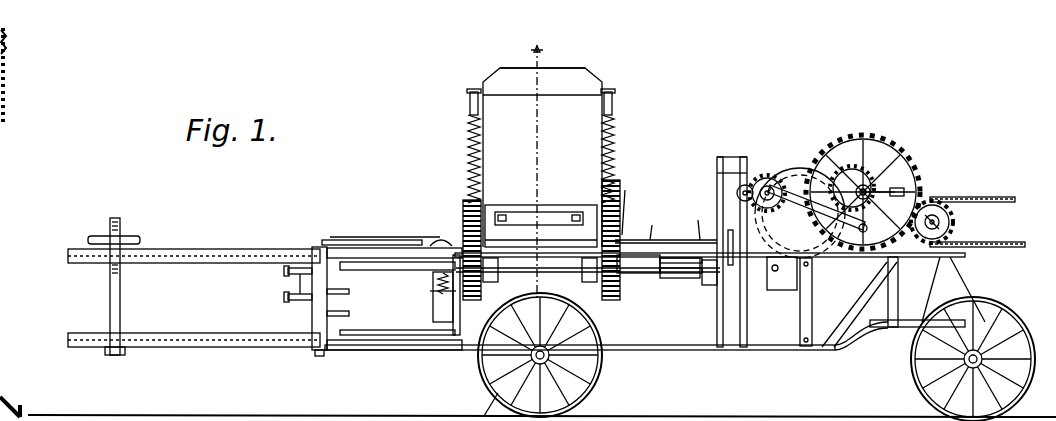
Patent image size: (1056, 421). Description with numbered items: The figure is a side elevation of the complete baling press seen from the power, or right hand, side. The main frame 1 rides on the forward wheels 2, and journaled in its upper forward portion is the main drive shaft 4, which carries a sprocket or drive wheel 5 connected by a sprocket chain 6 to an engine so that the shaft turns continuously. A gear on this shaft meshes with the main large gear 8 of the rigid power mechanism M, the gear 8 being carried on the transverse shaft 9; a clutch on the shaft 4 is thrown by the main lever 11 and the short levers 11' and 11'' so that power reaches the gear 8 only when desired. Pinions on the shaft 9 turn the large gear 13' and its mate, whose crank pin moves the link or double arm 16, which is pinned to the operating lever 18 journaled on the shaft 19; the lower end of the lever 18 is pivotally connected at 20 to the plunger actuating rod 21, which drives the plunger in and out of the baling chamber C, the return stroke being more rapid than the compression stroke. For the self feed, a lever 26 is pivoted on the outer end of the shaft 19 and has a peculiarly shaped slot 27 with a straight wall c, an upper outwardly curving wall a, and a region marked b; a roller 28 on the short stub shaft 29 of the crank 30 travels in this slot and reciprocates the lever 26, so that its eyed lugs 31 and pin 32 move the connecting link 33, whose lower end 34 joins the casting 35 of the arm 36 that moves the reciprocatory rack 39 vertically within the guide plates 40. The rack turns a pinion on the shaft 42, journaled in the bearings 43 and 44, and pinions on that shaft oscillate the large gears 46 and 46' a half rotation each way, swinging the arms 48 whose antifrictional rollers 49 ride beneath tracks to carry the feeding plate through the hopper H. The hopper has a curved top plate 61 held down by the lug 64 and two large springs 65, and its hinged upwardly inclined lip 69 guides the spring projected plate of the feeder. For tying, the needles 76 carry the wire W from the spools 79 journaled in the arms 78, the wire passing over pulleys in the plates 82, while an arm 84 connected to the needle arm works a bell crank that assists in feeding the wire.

The main frame 1 is at (780, 345).
The forward wheels 2 is at (990, 312).
The main drive shaft 4 is at (945, 225).
The sprocket or drive wheel 5 is at (985, 204).
The sprocket chain 6 is at (1000, 190).
The main large gear 8 is at (905, 175).
The shaft 9 is at (940, 205).
The main lever 11 is at (696, 219).
The short lever 11' is at (630, 201).
The short lever 11'' is at (660, 221).
The large gear 13' is at (821, 168).
The link or double arm 16 is at (787, 297).
The operating lever 18 is at (852, 322).
The shaft 19 is at (960, 200).
The pivotal connection 20 is at (812, 345).
The plunger actuating link or rod 21 is at (671, 285).
The lever 26 is at (862, 185).
The slot 27 is at (783, 187).
The roller 28 is at (777, 190).
The short stub shaft 29 is at (767, 190).
The crank 30 is at (782, 187).
The eyed lugs 31 is at (745, 187).
The pin 32 is at (740, 183).
The connecting link 33 is at (740, 190).
The lower end of link 34 is at (763, 187).
The casting 35 is at (746, 300).
The arm or link 36 is at (720, 290).
The reciprocatory rack 39 is at (740, 200).
The guide plates 40 is at (733, 290).
The shaft 42 is at (590, 284).
The bearing 43 is at (706, 285).
The bearings 44 is at (480, 300).
The large gear 46 is at (436, 329).
The large gear 46' is at (664, 325).
The arms 48 is at (490, 215).
The antifrictional rollers 49 is at (584, 215).
The curved top plate 61 is at (537, 132).
The lug 64 is at (470, 96).
The large springs 65 is at (467, 152).
The upwardly inclined lip 69 is at (560, 80).
The needles 76 is at (372, 270).
The arms 78 is at (318, 258).
The spools 79 is at (290, 283).
The plates 82 is at (436, 320).
The arm 84 is at (358, 243).
The hopper H is at (604, 86).
The power mechanism M is at (788, 131).
The wire W is at (353, 265).
The baling chamber C is at (630, 322).
The upper outwardly curving wall a is at (863, 176).
The small gear b is at (852, 174).
The straight wall c is at (824, 318).